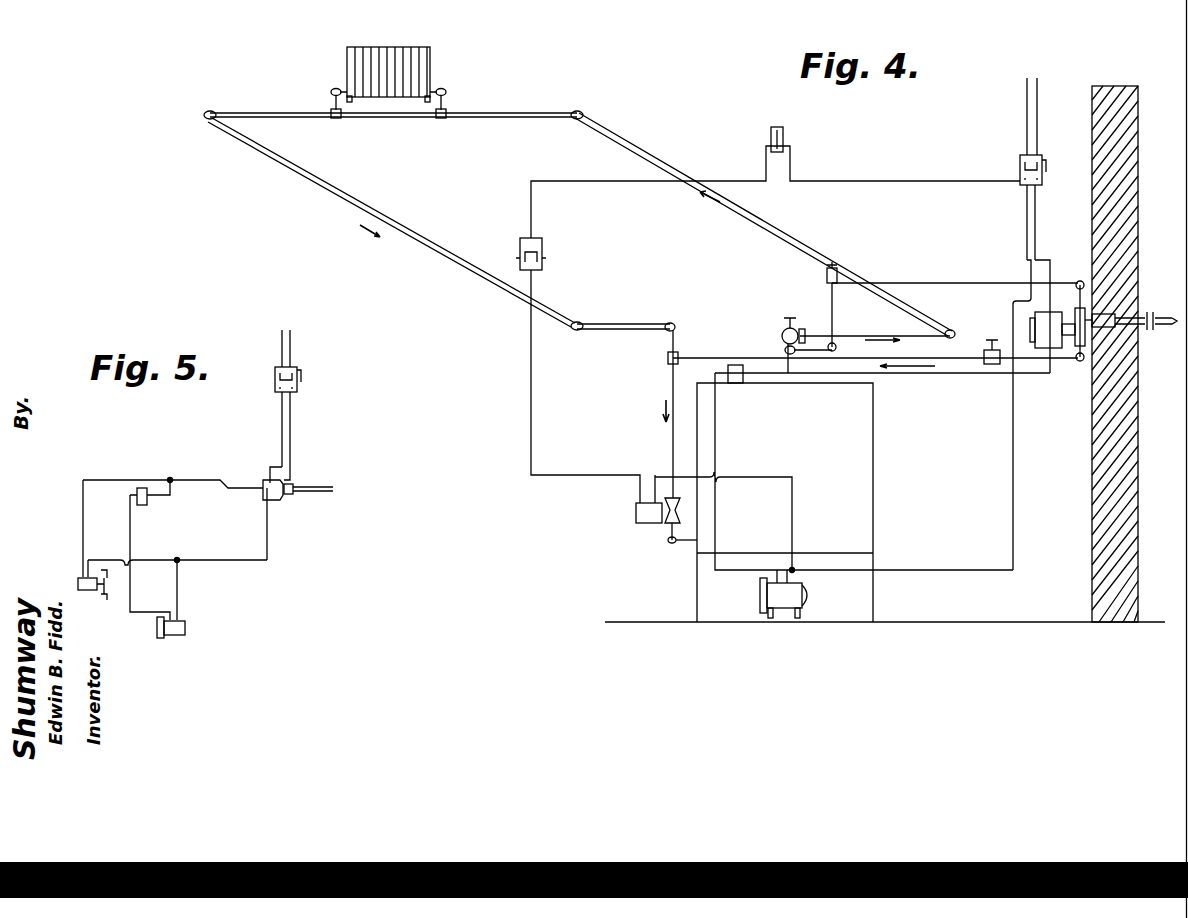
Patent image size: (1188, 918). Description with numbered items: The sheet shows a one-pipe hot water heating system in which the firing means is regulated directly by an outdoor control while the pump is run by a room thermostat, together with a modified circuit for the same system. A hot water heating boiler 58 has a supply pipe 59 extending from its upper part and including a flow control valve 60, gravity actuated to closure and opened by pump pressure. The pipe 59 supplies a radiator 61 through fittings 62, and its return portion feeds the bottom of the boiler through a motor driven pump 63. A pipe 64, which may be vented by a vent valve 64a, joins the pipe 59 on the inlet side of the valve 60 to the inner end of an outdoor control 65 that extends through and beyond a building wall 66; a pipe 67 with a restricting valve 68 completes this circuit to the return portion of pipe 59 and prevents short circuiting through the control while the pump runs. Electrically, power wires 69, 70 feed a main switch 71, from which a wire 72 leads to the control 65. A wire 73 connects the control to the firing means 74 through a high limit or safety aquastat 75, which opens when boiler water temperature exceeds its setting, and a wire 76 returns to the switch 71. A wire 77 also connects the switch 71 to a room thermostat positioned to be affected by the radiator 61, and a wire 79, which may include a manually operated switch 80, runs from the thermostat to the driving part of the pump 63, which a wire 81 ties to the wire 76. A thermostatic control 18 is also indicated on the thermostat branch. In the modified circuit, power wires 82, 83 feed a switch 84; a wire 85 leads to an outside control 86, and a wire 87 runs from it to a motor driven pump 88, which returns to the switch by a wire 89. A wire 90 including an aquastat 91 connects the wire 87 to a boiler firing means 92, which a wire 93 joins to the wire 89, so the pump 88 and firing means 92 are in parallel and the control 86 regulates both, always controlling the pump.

In FIG. 4, the thermostatic control 18 is at (784, 130).
In FIG. 4, the hot water heating boiler 58 is at (873, 470).
In FIG. 4, the supply pipe 59 is at (803, 325).
In FIG. 4, the flow control valve 60 is at (781, 333).
In FIG. 4, the radiator 61 is at (432, 70).
In FIG. 4, the fittings 62 is at (339, 120).
In FIG. 4, the motor driven pump 63 is at (650, 527).
In FIG. 4, the pipe 64 is at (878, 283).
In FIG. 4, the vent valve 64a is at (826, 275).
In FIG. 4, the outdoor control 65 is at (1165, 318).
In FIG. 4, the building wall 66 is at (1132, 398).
In FIG. 4, the pipe 67 is at (958, 360).
In FIG. 4, the restricting valve 68 is at (990, 365).
In FIG. 4, the power wire 69 is at (1026, 98).
In FIG. 4, the power wire 70 is at (1038, 97).
In FIG. 4, the main switch 71 is at (1043, 180).
In FIG. 4, the wire 72 is at (1026, 240).
In FIG. 4, the wire 73 is at (915, 373).
In FIG. 4, the firing means 74 is at (760, 601).
In FIG. 4, the high limit or safety aquastat 75 is at (735, 364).
In FIG. 4, the wire 76 is at (920, 570).
In FIG. 4, the wire 77 is at (916, 181).
In FIG. 4, the wire 79 is at (578, 181).
In FIG. 4, the manually operated switch 80 is at (545, 242).
In FIG. 4, the wire 81 is at (760, 476).
In FIG. 5, the power wire 82 is at (281, 336).
In FIG. 5, the power wire 83 is at (291, 341).
In FIG. 5, the switch 84 is at (298, 388).
In FIG. 5, the wire 85 is at (281, 424).
In FIG. 5, the outside control 86 is at (310, 487).
In FIG. 5, the wire 87 is at (112, 480).
In FIG. 5, the motor driven pump 88 is at (92, 593).
In FIG. 5, the wire 89 is at (160, 560).
In FIG. 5, the wire 90 is at (131, 522).
In FIG. 5, the high limit or safety aquastat 91 is at (136, 497).
In FIG. 5, the boiler firing means 92 is at (170, 640).
In FIG. 5, the wire 93 is at (178, 598).